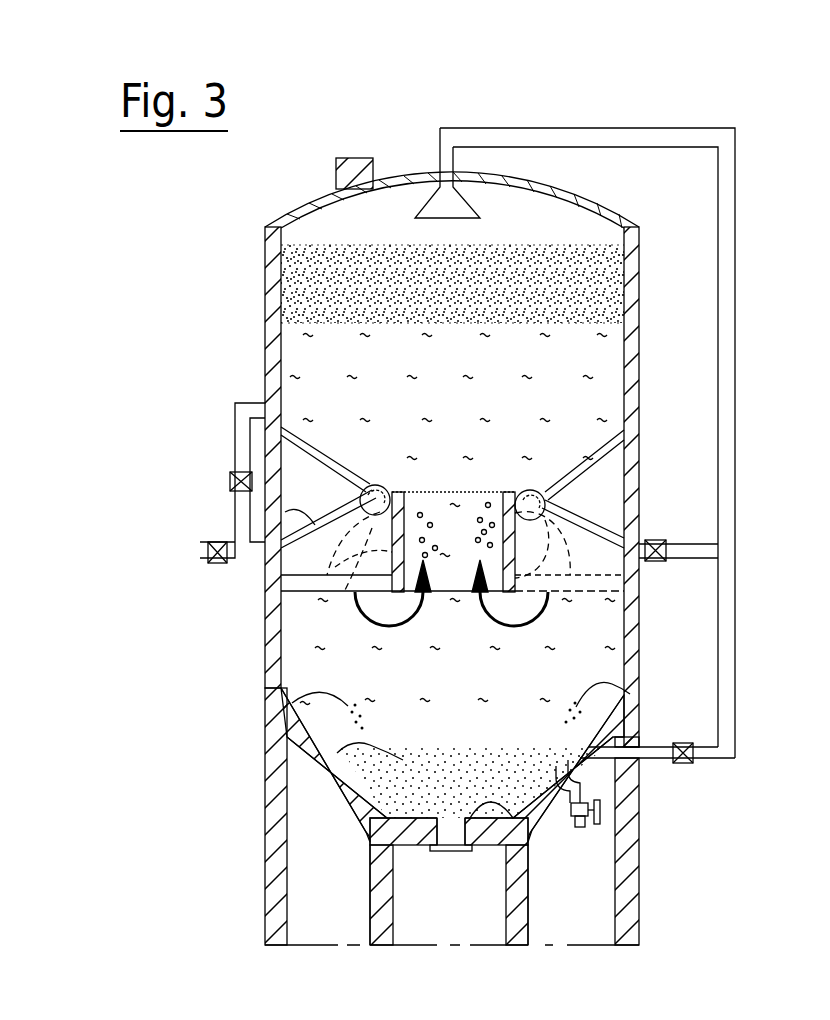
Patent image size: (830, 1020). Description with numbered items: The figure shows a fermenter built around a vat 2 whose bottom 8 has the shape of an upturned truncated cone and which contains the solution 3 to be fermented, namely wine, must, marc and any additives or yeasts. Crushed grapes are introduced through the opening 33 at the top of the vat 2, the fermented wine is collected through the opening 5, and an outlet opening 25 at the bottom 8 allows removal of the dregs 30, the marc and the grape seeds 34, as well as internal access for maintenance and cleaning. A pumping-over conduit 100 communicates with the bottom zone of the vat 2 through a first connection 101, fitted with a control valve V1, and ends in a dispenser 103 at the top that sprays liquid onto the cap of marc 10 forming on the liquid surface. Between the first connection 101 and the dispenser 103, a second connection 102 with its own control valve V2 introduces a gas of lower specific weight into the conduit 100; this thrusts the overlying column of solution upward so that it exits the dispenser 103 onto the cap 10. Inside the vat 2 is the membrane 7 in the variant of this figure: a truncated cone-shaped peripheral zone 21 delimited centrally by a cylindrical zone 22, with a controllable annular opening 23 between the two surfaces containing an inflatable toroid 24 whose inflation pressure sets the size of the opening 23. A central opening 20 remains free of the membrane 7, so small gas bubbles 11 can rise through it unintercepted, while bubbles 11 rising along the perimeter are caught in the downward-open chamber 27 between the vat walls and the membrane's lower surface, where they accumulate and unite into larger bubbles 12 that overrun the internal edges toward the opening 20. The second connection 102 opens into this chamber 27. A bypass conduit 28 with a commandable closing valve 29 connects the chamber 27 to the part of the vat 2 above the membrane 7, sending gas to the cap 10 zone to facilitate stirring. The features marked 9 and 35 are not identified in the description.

The vat 2 is at (632, 421).
The solution to be fermented 3 is at (471, 693).
The opening for collecting the fermented solution 5 is at (572, 810).
The membrane 7 is at (572, 428).
The bottom 8 is at (513, 807).
The sand layer surface 9 is at (325, 248).
The cap of marc 10 is at (452, 297).
The small gas bubbles 11 is at (292, 703).
The larger bubbles 12 is at (353, 460).
The opening 20 is at (450, 468).
The truncated cone-shaped peripheral zone 21 is at (582, 517).
The cylindrical zone 22 is at (340, 562).
The controllable annular opening 23 is at (372, 484).
The inflatable toroid 24 is at (388, 525).
The outlet opening 25 is at (452, 852).
The chamber 27 is at (285, 512).
The bypass conduit 28 is at (256, 403).
The commandable closing valve 29 is at (230, 480).
The dregs 30 is at (408, 787).
The opening at the top of the vat 33 is at (360, 158).
The grape seeds 34 is at (337, 753).
The filter bed boundary 35 is at (612, 300).
The pumping-over conduit 100 is at (700, 193).
The first connection 101 is at (660, 763).
The second connection 102 is at (697, 520).
The dispenser 103 is at (478, 205).
The control valve V1 is at (688, 764).
The control valve V2 is at (668, 570).